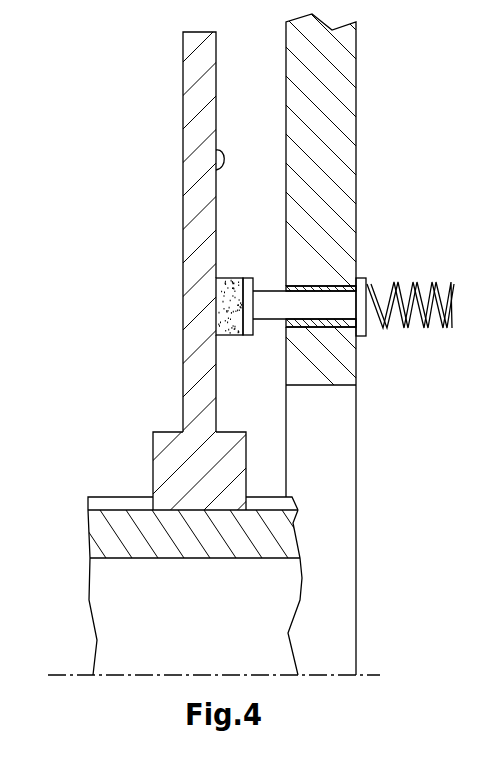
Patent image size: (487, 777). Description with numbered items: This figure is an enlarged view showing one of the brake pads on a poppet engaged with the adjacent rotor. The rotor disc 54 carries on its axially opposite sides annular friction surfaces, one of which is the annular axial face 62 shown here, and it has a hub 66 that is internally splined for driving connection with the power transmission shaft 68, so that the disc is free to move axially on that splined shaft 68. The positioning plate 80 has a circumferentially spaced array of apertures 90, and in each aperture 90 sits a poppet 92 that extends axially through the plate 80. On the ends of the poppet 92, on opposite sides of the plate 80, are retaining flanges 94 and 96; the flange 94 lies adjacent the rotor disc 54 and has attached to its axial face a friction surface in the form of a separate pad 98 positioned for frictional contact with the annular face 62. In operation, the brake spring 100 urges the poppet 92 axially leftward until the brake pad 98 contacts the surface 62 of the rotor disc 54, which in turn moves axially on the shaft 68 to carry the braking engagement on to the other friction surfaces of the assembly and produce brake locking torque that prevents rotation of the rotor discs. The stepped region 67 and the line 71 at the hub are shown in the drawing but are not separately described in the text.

The rotor disc 54 is at (183, 143).
The annular friction surface 62 is at (216, 170).
The hub 66 is at (193, 473).
The flange plate 67 is at (129, 497).
The power transmission shaft 68 is at (198, 538).
The interface joint 71 is at (184, 511).
The positioning plate 80 is at (357, 104).
The aperture 90 is at (323, 318).
The poppet 92 is at (270, 302).
The retaining flange 94 is at (244, 336).
The retaining flange 96 is at (362, 336).
The pad 98 is at (220, 305).
The brake spring 100 is at (410, 283).